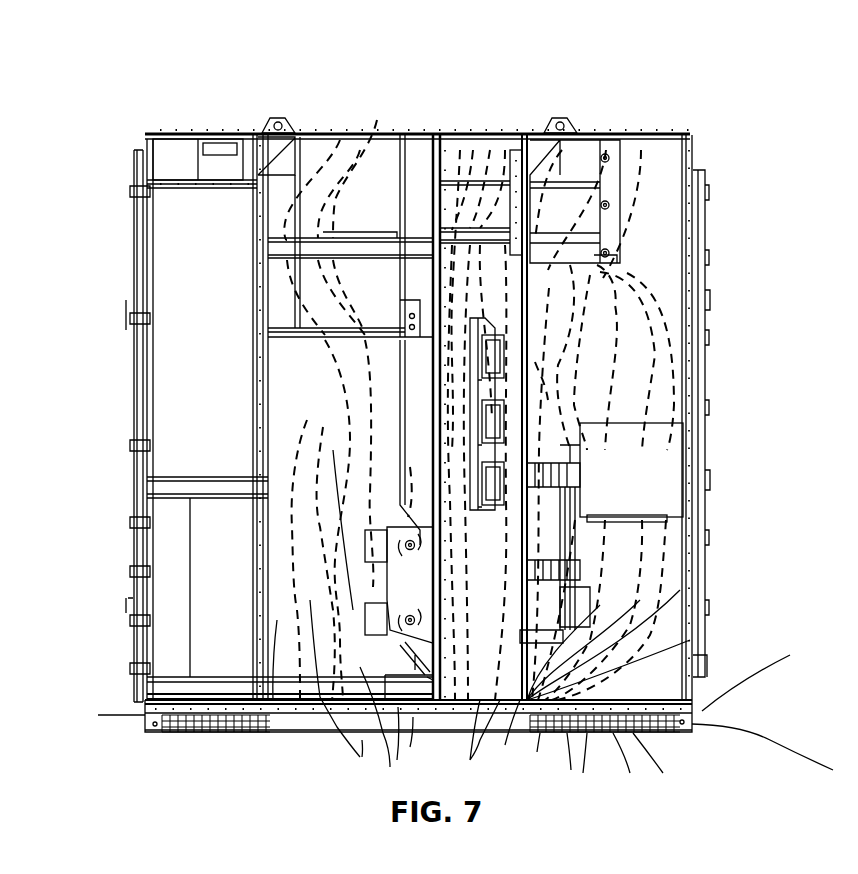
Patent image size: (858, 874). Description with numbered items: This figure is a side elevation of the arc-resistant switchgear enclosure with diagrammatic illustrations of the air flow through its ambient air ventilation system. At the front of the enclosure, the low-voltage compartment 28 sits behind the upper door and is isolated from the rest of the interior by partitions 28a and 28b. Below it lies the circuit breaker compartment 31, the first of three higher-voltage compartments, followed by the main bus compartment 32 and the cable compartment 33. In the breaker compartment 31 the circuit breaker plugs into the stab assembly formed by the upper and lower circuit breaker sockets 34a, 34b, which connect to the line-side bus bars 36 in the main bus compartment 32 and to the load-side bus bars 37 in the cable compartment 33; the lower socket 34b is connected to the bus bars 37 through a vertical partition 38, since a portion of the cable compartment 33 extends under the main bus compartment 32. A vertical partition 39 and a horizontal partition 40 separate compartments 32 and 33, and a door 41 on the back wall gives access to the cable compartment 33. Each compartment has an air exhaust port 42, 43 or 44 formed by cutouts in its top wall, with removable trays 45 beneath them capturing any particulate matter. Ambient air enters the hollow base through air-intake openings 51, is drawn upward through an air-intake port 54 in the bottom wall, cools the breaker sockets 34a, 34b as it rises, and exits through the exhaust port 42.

The low-voltage compartment 28 is at (195, 293).
The partition 28a is at (258, 398).
The partition 28b is at (213, 487).
The circuit breaker compartment 31 is at (390, 735).
The main bus compartment 32 is at (406, 135).
The cable compartment 33 is at (660, 655).
The circuit breaker socket 34a is at (368, 545).
The circuit breaker socket 34b is at (368, 615).
The line-side bus bars 36 is at (500, 453).
The load-side bus bars 37 is at (590, 515).
The vertical partition 38 is at (496, 335).
The vertical partition 39 is at (527, 560).
The horizontal partition 40 is at (705, 222).
The door 41 is at (705, 612).
The air exhaust port 42 is at (298, 135).
The air exhaust port 43 is at (448, 135).
The air exhaust port 44 is at (563, 135).
The removable trays 45 is at (352, 135).
The air-intake openings 51 is at (145, 722).
The air-intake port 54 is at (320, 619).